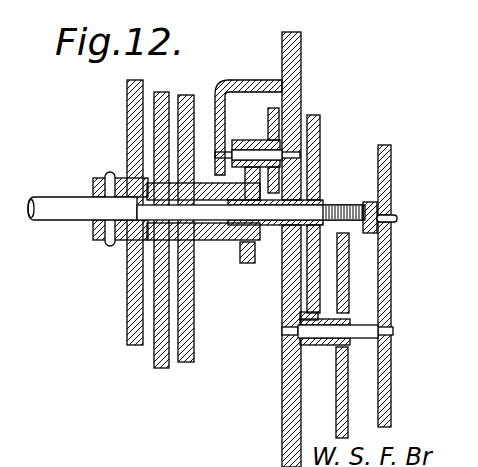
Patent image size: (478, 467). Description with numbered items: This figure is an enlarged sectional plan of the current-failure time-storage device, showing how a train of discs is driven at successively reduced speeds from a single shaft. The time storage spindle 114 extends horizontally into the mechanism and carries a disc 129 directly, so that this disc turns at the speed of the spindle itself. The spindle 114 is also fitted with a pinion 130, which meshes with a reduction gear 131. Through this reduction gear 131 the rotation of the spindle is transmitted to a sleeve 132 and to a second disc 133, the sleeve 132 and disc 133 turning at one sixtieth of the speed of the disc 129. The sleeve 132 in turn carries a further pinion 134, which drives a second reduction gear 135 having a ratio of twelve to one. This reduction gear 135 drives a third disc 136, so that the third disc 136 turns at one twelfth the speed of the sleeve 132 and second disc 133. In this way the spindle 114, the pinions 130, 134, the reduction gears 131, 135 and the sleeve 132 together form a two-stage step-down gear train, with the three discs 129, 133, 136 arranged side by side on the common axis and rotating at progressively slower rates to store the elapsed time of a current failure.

The time storage spindle 114 is at (53, 210).
The disc 129 is at (133, 282).
The pinion 130 is at (344, 205).
The reduction gear 131 is at (320, 342).
The sleeve 132 is at (212, 243).
The disc 133 is at (154, 347).
The pinion 134 is at (273, 237).
The reduction gear 135 is at (255, 148).
The third disc 136 is at (192, 350).